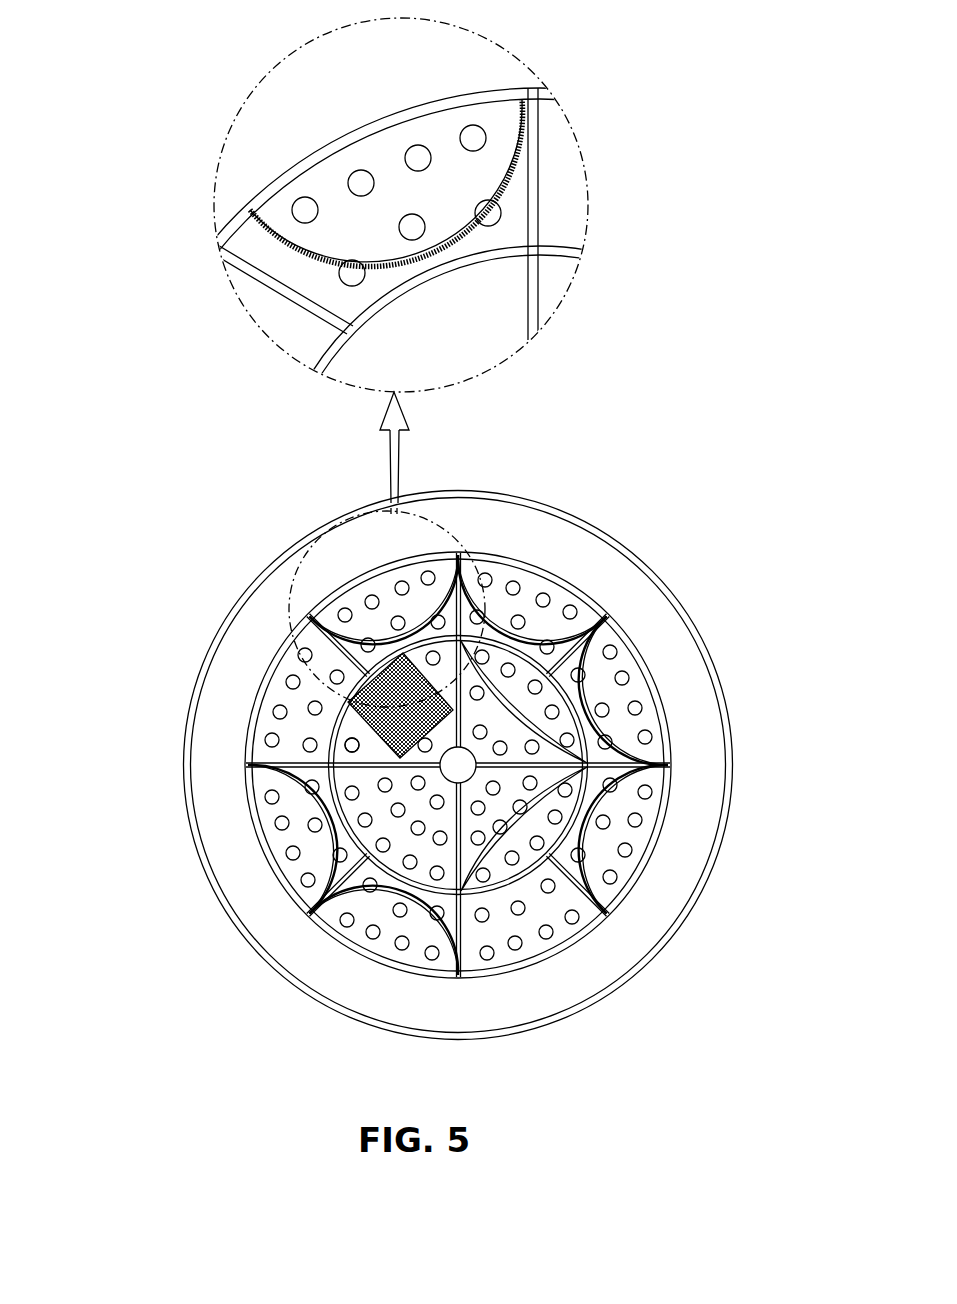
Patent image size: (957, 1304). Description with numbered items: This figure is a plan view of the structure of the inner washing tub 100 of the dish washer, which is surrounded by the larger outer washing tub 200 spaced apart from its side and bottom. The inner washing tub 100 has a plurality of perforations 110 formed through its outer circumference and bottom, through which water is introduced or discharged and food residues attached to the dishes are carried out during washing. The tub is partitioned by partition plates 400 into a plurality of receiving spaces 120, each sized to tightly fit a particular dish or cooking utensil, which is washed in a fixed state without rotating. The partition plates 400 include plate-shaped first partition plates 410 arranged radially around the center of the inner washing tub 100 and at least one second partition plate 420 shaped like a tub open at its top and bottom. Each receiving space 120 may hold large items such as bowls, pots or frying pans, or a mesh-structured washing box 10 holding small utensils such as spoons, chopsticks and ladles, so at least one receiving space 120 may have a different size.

The washing box 10 is at (228, 762).
The inner washing tub 100 is at (537, 570).
The perforations 110 is at (548, 934).
The receiving space 120 is at (630, 687).
The outer washing tub 200 is at (303, 558).
The partition plate 400 is at (245, 656).
The first partition plate 410 is at (340, 665).
The second partition plate 420 is at (372, 738).